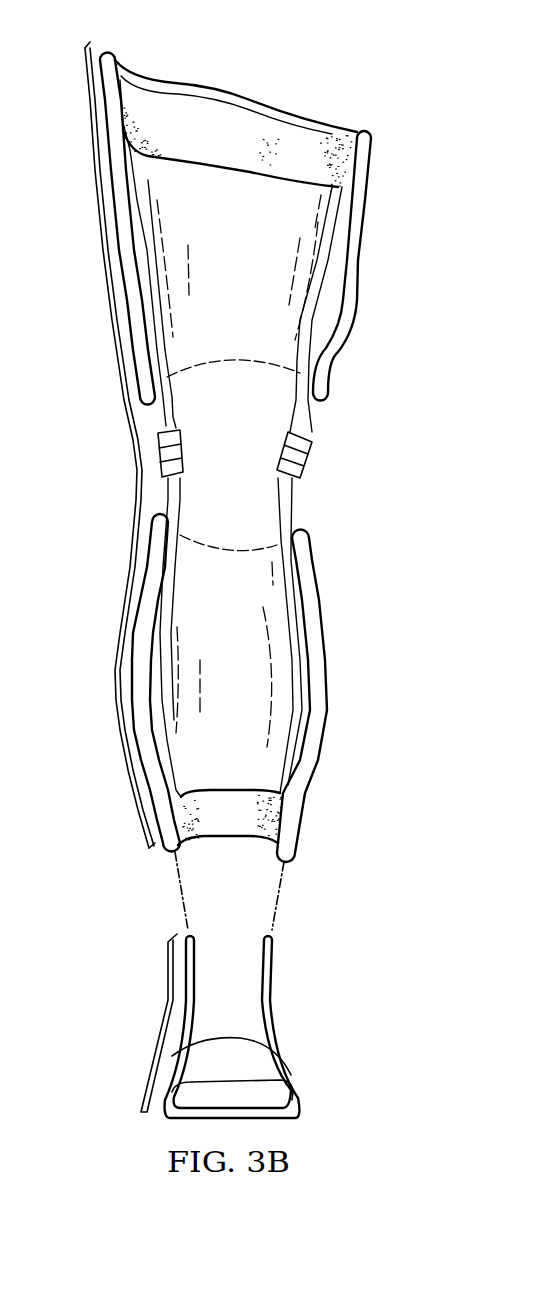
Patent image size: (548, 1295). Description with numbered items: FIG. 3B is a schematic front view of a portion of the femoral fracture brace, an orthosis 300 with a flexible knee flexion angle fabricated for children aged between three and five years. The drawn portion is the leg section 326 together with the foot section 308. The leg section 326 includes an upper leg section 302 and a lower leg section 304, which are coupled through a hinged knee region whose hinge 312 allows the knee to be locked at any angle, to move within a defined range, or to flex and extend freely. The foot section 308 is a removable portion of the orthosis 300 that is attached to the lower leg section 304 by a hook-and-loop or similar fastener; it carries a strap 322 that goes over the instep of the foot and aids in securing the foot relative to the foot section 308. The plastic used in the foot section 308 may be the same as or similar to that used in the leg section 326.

The orthosis 300 is at (423, 84).
The upper leg section 302 is at (359, 243).
The lower leg section 304 is at (328, 678).
The foot section 308 is at (166, 1014).
The hinge 312 is at (306, 460).
The strap 322 is at (218, 1035).
The leg section 326 is at (137, 458).